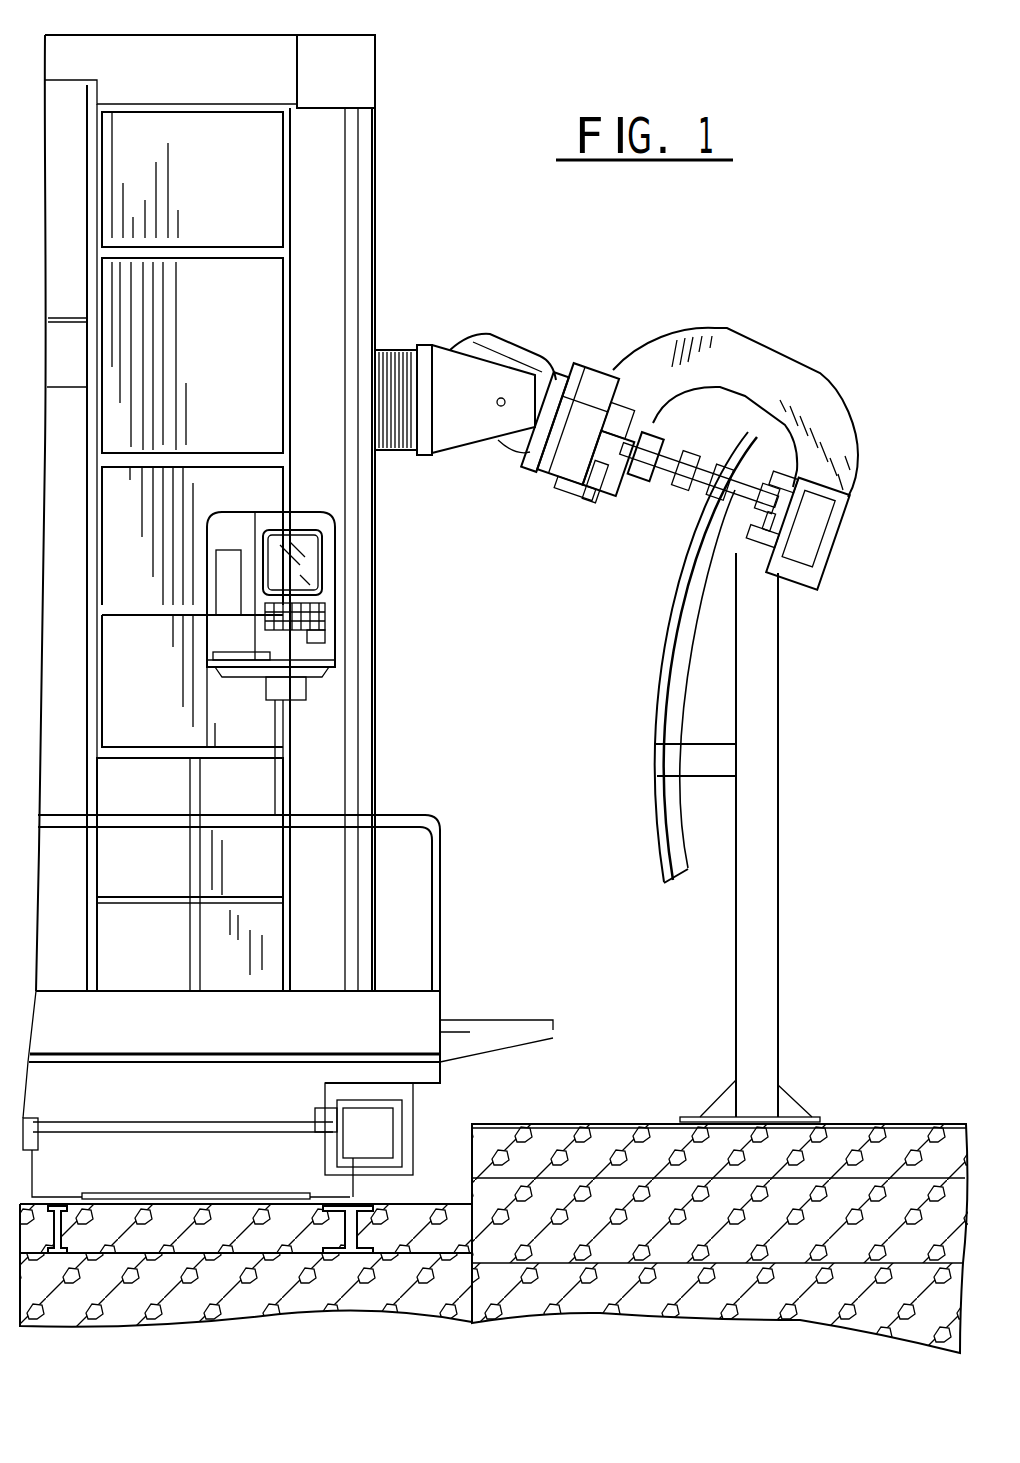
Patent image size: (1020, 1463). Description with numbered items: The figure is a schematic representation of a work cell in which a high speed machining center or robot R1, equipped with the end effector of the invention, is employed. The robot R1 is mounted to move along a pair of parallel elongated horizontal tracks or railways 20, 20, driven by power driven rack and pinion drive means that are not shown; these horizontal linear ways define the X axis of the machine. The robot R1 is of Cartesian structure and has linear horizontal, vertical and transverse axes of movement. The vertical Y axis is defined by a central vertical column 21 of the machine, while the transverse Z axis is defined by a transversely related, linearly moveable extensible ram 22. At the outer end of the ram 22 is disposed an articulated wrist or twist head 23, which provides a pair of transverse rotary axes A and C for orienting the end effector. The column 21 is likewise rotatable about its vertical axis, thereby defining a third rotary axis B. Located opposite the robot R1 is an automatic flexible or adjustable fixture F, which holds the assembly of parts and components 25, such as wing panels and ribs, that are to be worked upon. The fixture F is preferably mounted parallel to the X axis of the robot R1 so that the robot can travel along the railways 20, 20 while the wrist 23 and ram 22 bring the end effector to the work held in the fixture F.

The horizontal tracks or railways 20 is at (333, 1204).
The central vertical column 21 is at (370, 756).
The extensible ram 22 is at (388, 458).
The articulated wrist or twist head 23 is at (494, 440).
The assembly of parts and components 25 is at (656, 750).
The automatic flexible or adjustable fixture F is at (734, 990).
The high speed machining center or robot R1 is at (377, 90).
The rotary axis A is at (518, 388).
The rotary axis B is at (225, 26).
The rotary axis C is at (704, 447).
The Y axis Y is at (432, 170).
The Z axis Z is at (488, 302).